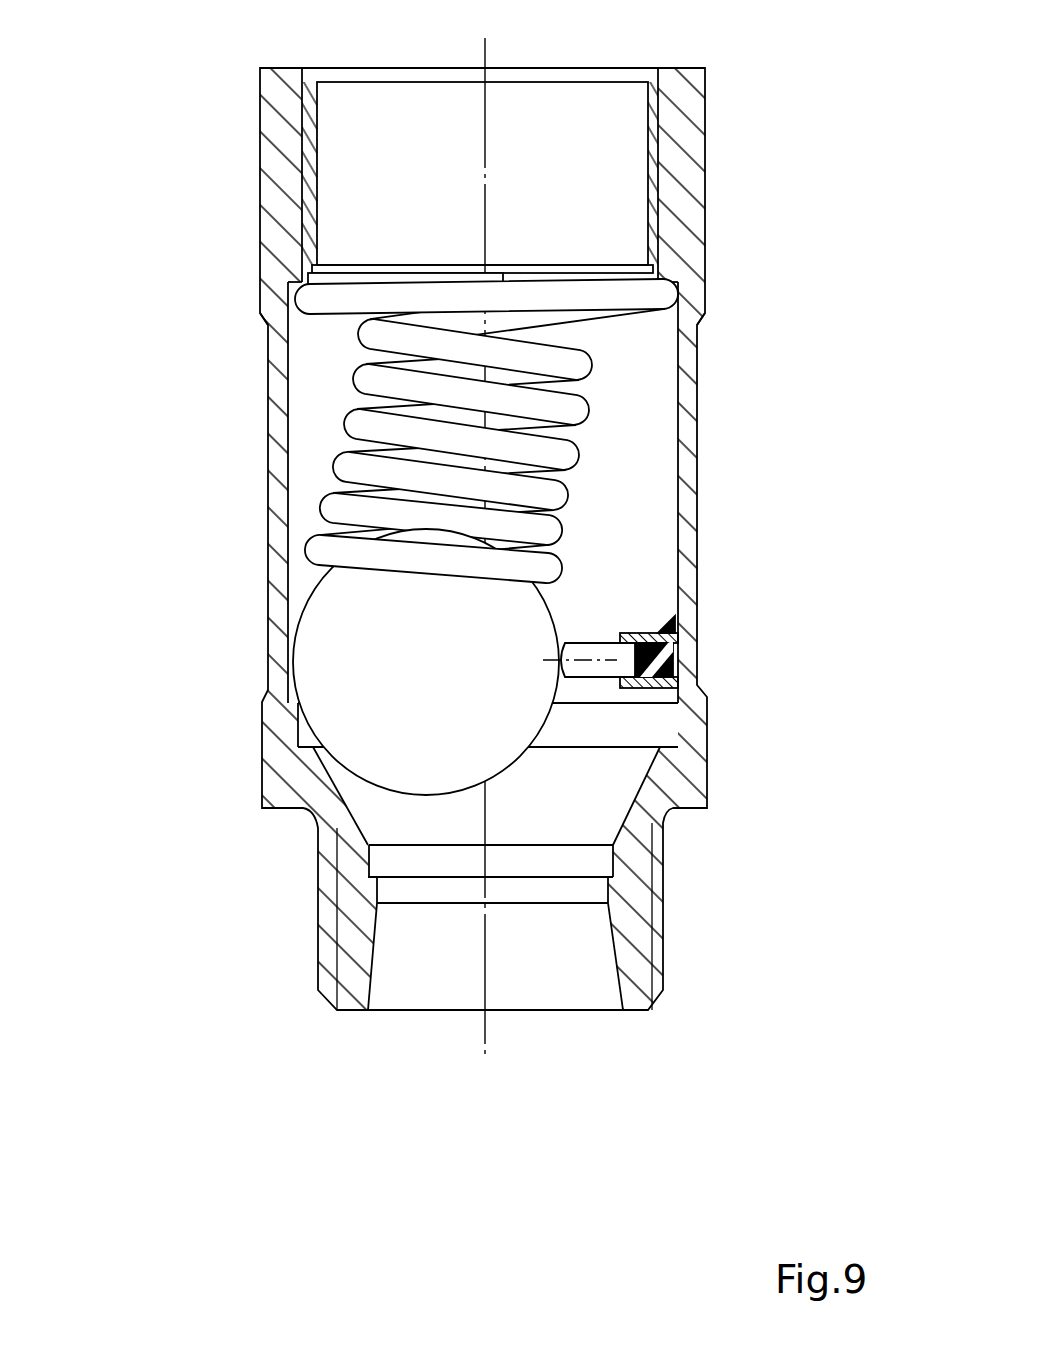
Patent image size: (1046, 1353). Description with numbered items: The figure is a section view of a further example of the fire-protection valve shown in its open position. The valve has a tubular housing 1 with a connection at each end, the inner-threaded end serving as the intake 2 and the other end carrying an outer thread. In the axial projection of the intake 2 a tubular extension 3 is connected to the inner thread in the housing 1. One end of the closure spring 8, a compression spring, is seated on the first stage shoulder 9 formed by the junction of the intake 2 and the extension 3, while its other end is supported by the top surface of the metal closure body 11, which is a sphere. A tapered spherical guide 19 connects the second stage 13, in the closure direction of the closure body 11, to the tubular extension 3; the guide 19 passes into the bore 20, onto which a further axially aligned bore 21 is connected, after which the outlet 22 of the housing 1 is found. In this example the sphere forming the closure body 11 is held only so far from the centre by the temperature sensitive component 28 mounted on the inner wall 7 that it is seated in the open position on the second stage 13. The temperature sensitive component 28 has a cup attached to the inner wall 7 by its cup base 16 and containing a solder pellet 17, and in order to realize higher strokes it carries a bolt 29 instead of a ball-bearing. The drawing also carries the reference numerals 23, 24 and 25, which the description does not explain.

The tubular housing 1 is at (287, 104).
The intake 2 is at (587, 182).
The tubular extension 3 is at (322, 365).
The inner wall 7 is at (700, 480).
The closure spring 8 is at (595, 422).
The first stage shoulder 9 is at (260, 247).
The closure body 11 is at (517, 703).
The second stage 13 is at (318, 742).
The cup base 16 is at (612, 653).
The solder pellet 17 is at (678, 672).
The tapered spherical guide 19 is at (595, 813).
The bore 20 is at (590, 862).
The bore 21 is at (535, 893).
The outlet 22 is at (442, 987).
The seat edge 23 is at (395, 845).
The shoulder 24 is at (408, 875).
The spring retainer 25 is at (540, 290).
The temperature sensitive component 28 is at (665, 625).
The bolt 29 is at (660, 668).